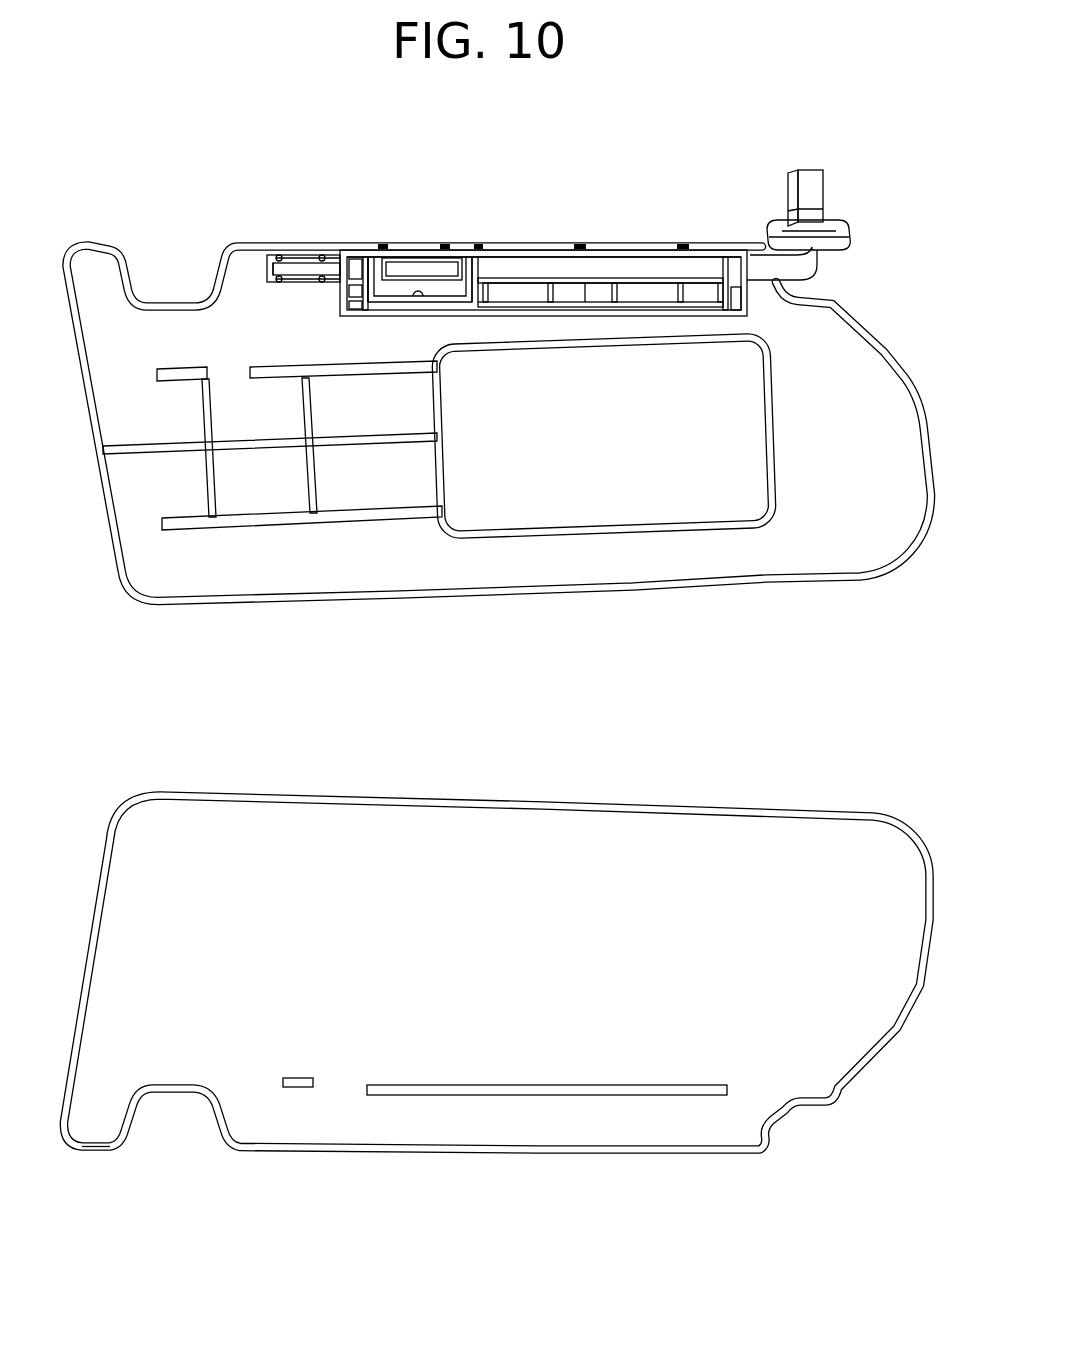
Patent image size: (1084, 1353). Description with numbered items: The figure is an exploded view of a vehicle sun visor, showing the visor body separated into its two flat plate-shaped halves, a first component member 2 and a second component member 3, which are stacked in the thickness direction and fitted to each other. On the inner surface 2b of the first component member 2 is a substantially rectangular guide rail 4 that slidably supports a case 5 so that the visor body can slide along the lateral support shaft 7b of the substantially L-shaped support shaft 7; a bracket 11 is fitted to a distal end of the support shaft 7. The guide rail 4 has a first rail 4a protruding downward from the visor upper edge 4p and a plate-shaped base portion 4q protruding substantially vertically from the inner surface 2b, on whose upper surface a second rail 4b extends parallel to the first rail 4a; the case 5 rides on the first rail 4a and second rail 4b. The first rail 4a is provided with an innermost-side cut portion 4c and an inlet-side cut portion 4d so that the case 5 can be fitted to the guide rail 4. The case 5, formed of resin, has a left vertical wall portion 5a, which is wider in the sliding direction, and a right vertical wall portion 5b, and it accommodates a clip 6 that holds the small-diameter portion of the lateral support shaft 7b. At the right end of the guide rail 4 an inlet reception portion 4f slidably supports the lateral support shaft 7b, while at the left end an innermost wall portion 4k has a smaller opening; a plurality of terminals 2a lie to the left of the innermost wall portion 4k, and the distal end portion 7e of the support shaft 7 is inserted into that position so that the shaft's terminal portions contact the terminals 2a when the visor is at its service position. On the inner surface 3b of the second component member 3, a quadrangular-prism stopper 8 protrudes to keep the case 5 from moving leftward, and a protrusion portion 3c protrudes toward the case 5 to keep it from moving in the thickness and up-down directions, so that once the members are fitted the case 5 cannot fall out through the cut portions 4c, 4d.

The first component member 2 is at (739, 610).
The terminals 2a is at (280, 255).
The inner surface 2b is at (320, 556).
The second component member 3 is at (666, 1180).
The inner surface 3b is at (255, 1110).
The protrusion portion 3c is at (463, 1096).
The guide rail 4 is at (638, 236).
The first rail 4a is at (607, 253).
The second rail 4b is at (530, 283).
The innermost-side cut portion 4c is at (357, 250).
The inlet-side cut portion 4d is at (447, 250).
The inlet reception portion 4f is at (733, 257).
The innermost wall portion 4k is at (340, 305).
The visor upper edge 4p is at (514, 243).
The base portion 4q is at (587, 313).
The case 5 is at (392, 299).
The left vertical wall portion 5a is at (373, 262).
The right vertical wall portion 5b is at (465, 262).
The clip 6 is at (412, 258).
The support shaft 7 is at (830, 272).
The lateral support shaft 7b is at (665, 267).
The distal end portion 7e is at (275, 265).
The stopper 8 is at (297, 1088).
The bracket 11 is at (837, 224).